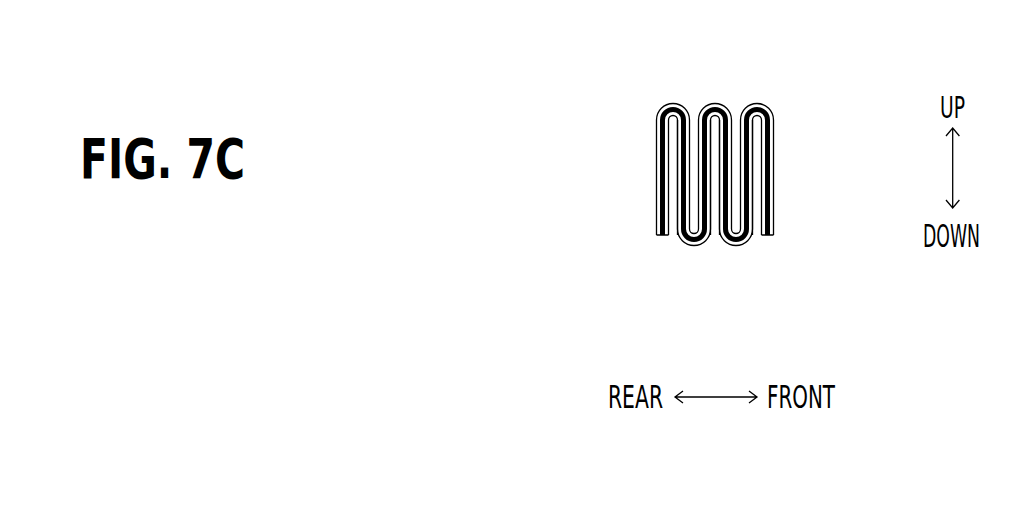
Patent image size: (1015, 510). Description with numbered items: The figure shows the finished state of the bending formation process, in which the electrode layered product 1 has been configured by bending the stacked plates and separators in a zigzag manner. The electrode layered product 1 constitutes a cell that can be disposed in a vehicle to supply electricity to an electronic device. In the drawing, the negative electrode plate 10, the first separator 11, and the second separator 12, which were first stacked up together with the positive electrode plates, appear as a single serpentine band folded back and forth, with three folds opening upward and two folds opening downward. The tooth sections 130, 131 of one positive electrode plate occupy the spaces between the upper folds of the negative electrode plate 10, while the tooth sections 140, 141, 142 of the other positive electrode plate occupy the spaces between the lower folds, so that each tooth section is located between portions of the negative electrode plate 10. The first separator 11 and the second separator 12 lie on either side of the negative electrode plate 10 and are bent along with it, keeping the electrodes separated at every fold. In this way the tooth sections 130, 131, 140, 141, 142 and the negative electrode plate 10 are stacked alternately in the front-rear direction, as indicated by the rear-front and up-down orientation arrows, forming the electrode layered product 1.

The electrode layered product 1 is at (613, 147).
The negative electrode plate 10 is at (772, 217).
The first separator 11 is at (772, 188).
The second separator 12 is at (760, 243).
The tooth section 130 is at (693, 112).
The tooth section 131 is at (737, 112).
The tooth section 140 is at (668, 237).
The tooth section 141 is at (713, 233).
The tooth section 142 is at (755, 237).